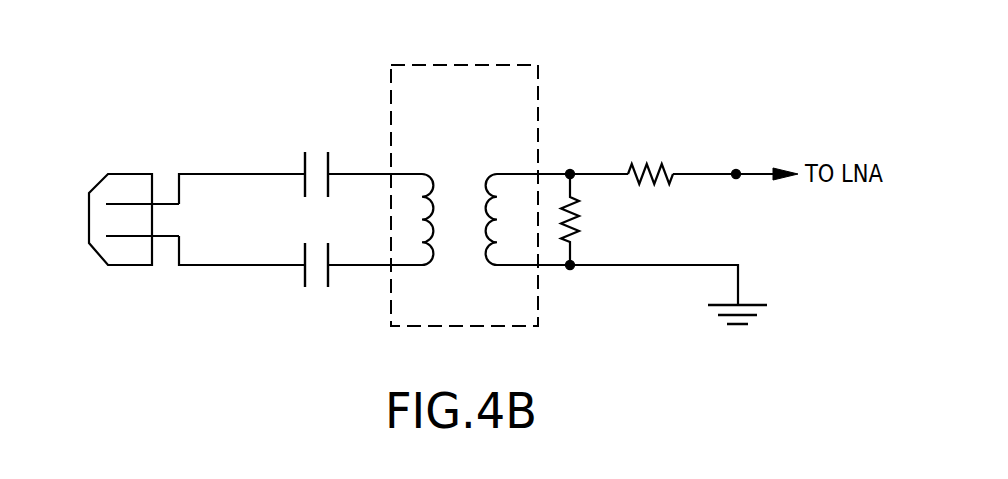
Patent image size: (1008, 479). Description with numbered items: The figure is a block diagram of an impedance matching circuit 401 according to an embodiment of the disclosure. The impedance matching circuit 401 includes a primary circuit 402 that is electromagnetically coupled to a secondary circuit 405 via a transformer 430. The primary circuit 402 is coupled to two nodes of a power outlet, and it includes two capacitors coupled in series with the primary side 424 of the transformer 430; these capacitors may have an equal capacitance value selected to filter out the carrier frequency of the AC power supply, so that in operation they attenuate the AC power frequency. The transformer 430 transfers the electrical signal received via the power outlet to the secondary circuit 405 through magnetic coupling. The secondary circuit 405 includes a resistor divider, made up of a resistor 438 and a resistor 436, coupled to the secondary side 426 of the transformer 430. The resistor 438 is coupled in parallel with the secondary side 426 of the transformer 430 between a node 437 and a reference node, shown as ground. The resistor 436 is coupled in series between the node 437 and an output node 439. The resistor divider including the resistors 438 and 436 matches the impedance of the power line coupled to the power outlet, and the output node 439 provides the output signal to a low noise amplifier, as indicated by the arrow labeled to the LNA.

The impedance matching circuit 401 is at (753, 45).
The primary circuit 402 is at (252, 82).
The secondary circuit 405 is at (648, 80).
The primary side 424 is at (424, 176).
The secondary side 426 is at (498, 176).
The transformer 430 is at (485, 65).
The resistor 436 is at (649, 163).
The node 437 is at (570, 170).
The resistor 438 is at (577, 218).
The output node 439 is at (738, 172).